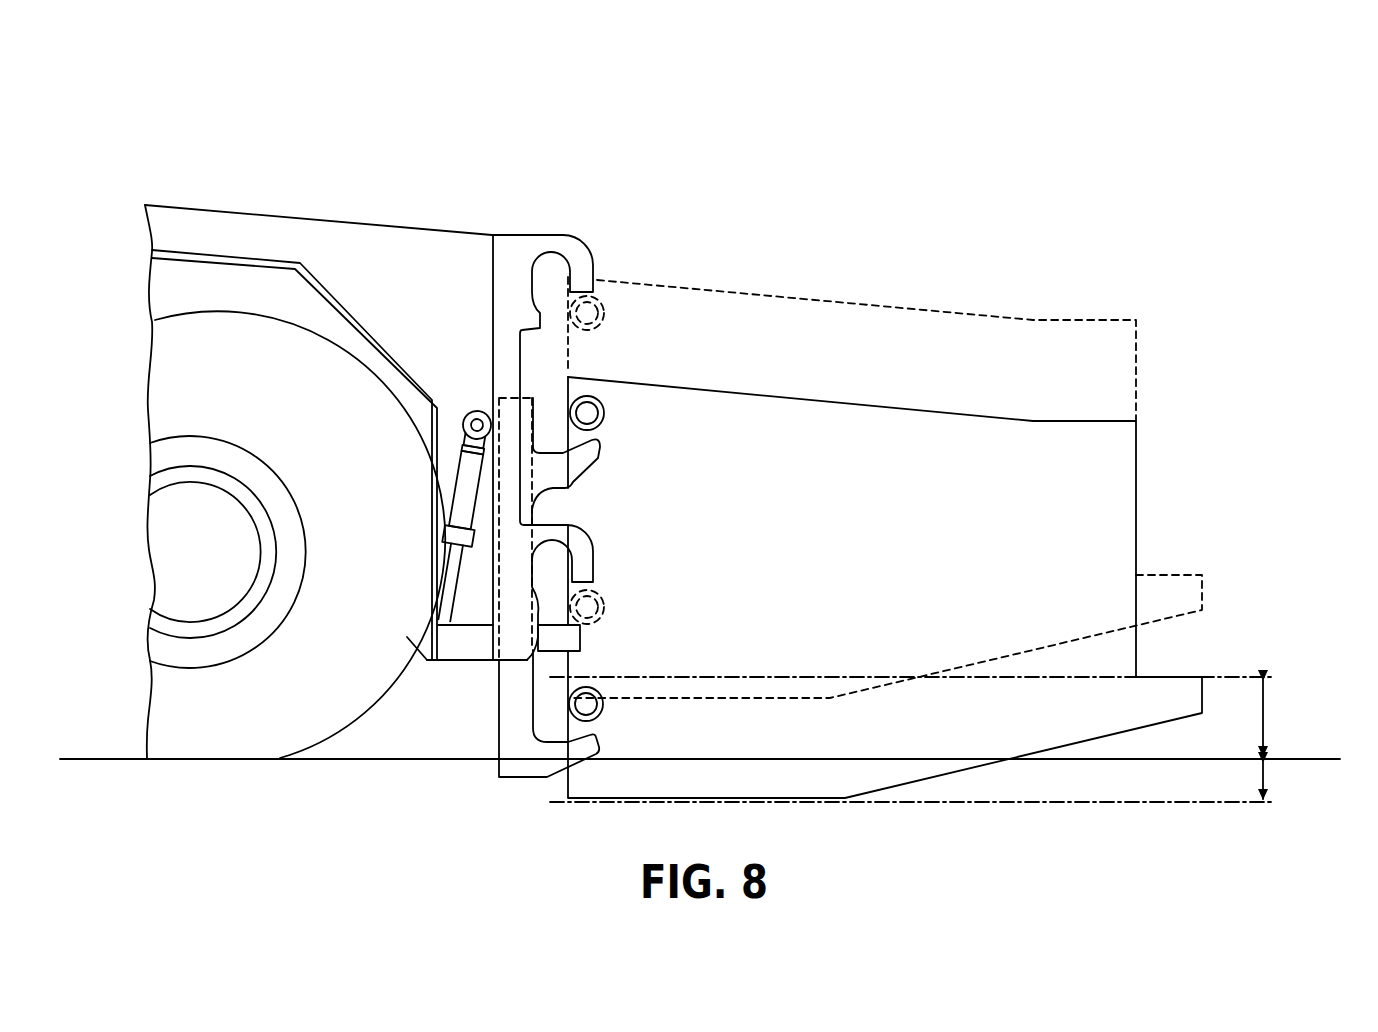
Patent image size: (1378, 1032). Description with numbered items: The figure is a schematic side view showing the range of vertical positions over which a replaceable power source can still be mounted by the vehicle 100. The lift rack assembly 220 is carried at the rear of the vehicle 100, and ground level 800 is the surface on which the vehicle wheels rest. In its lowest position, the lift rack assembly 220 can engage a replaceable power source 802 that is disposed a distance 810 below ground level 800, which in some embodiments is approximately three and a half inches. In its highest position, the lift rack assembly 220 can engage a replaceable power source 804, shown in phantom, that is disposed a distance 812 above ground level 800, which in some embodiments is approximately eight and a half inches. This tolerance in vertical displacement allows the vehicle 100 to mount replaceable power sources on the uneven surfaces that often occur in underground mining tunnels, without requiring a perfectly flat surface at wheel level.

The vehicle 100 is at (897, 128).
The lift rack assembly 220 is at (484, 706).
The ground level 800 is at (458, 760).
The replaceable power source 802 is at (1137, 482).
The replaceable power source 804 is at (1083, 319).
The distance 810 is at (1268, 780).
The distance 812 is at (1268, 719).